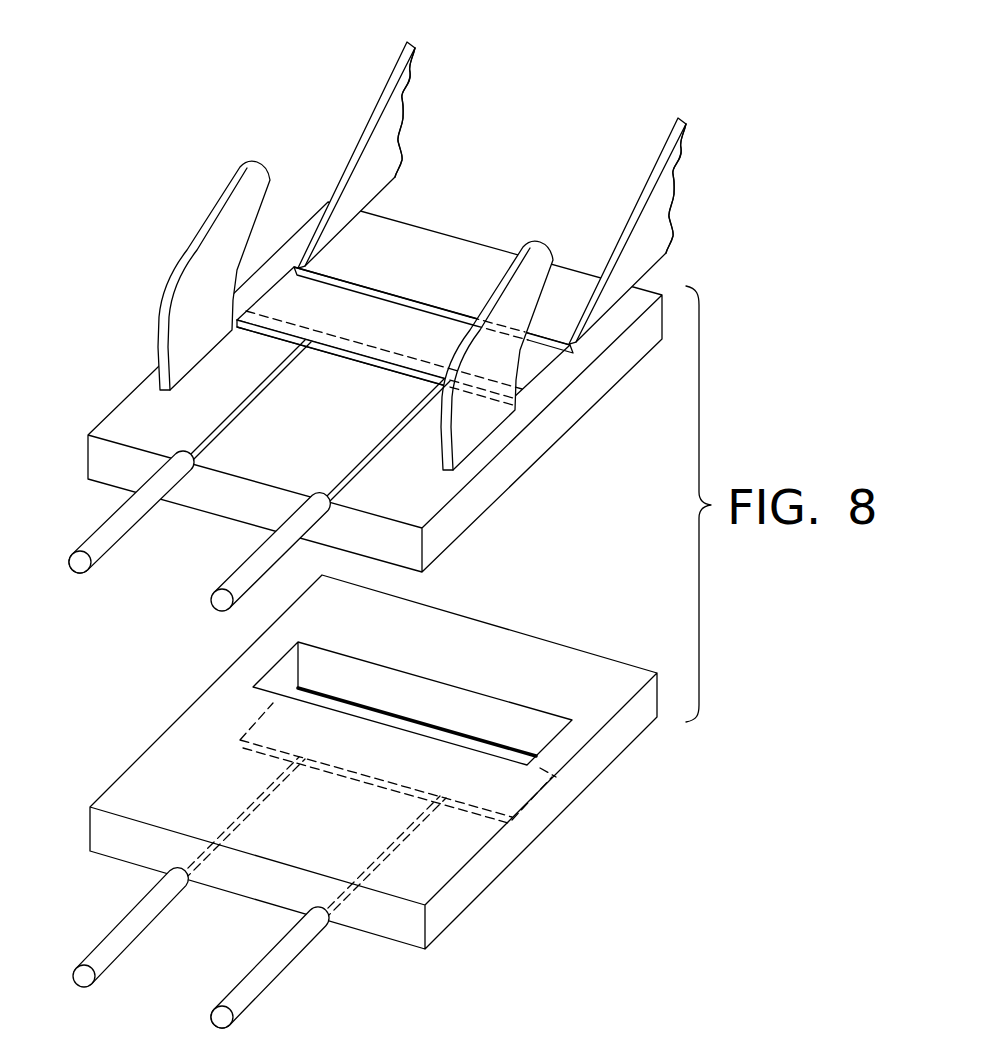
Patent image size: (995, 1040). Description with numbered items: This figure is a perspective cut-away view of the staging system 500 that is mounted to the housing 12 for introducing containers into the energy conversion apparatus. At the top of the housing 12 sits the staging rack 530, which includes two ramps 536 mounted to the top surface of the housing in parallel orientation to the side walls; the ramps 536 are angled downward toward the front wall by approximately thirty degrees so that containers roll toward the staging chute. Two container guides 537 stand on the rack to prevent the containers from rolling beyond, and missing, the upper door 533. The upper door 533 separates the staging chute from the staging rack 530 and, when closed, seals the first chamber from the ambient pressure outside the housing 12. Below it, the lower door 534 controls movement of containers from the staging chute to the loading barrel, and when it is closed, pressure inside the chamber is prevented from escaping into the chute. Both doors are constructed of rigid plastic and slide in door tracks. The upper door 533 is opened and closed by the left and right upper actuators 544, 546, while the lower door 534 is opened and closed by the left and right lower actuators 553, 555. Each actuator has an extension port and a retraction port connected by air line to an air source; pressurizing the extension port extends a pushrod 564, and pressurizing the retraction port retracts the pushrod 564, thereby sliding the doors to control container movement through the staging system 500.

The staging system 500 is at (263, 110).
The housing 12 is at (140, 412).
The staging rack 530 is at (373, 110).
The upper door 533 is at (387, 332).
The lower door 534 is at (400, 757).
The ramps 536 is at (377, 160).
The container guides 537 is at (221, 233).
The left upper actuator 544 is at (122, 517).
The right upper actuator 546 is at (267, 557).
The left lower actuator 553 is at (140, 917).
The right lower actuator 555 is at (282, 957).
The pushrod 564 is at (368, 455).